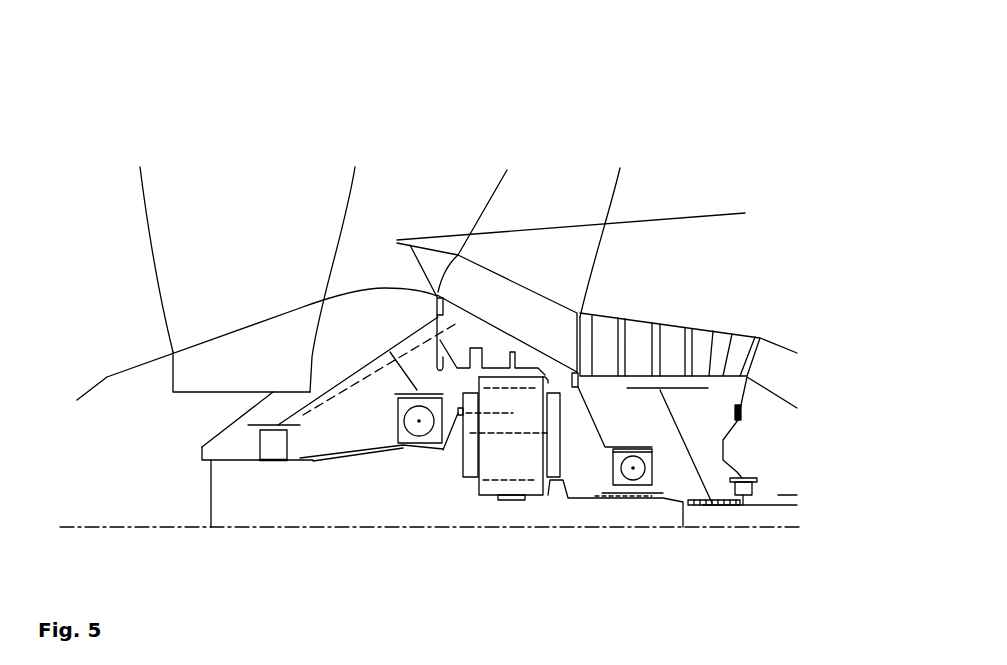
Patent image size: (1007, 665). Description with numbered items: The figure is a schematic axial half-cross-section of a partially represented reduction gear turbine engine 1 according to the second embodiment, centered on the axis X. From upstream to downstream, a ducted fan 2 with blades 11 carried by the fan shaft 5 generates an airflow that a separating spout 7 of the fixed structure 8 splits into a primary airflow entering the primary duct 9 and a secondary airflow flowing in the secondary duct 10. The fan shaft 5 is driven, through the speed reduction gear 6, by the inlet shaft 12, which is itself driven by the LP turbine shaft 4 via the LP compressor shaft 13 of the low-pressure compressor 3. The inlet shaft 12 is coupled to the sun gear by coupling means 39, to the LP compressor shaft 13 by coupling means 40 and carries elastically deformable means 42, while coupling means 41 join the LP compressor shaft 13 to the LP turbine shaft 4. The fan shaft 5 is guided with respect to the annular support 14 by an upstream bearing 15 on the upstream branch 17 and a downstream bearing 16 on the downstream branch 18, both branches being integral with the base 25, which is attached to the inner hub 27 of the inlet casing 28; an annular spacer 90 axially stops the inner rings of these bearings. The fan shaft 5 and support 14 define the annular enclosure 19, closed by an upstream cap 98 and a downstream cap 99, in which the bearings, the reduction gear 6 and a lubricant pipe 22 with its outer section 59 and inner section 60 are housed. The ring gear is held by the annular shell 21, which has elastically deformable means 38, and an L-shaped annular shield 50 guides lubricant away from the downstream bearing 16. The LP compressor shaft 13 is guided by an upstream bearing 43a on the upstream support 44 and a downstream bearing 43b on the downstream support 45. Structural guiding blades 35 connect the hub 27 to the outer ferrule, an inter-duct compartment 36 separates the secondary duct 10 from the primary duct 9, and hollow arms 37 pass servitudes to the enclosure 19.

The reduction gear turbine engine 1 is at (112, 108).
The ducted fan 2 is at (133, 100).
The low-pressure compressor 3 is at (733, 317).
The low-pressure turbine shaft 4 is at (777, 527).
The fan shaft 5 is at (335, 463).
The speed reduction gear 6 is at (470, 508).
The separating spout 7 is at (397, 240).
The fixed structure 8 is at (728, 202).
The primary duct 9 is at (442, 277).
The secondary duct 10 is at (656, 180).
The blades 11 is at (193, 265).
The inlet shaft 12 is at (575, 517).
The LP compressor shaft 13 is at (683, 513).
The annular support 14 is at (370, 345).
The upstream bearing 15 is at (271, 447).
The downstream bearing 16 is at (437, 353).
The upstream branch 17 is at (308, 388).
The downstream branch 18 is at (406, 364).
The annular enclosure 19 is at (402, 433).
The annular shell 21 is at (460, 330).
The pipe 22 is at (348, 368).
The base 25 is at (418, 323).
The inner hub 27 is at (602, 273).
The inlet casing 28 is at (640, 249).
The structural guiding blades 35 is at (542, 188).
The inter-duct compartment 36 is at (555, 266).
The hollow arms 37 is at (558, 328).
The elastically deformable means 38 is at (484, 340).
The coupling means 39 is at (509, 520).
The coupling means 40 is at (620, 482).
The coupling means 41 is at (727, 527).
The elastically deformable means 42 is at (551, 515).
The upstream bearing 43a is at (636, 516).
The downstream bearing 43b is at (743, 497).
The upstream support 44 is at (593, 423).
The downstream support 45 is at (735, 433).
The annular shield 50 is at (403, 437).
The outer section 59 is at (420, 352).
The inner section 60 is at (375, 440).
The annular spacer 90 is at (315, 463).
The upstream cap 98 is at (211, 495).
The downstream cap 99 is at (706, 518).
The axis X is at (747, 506).